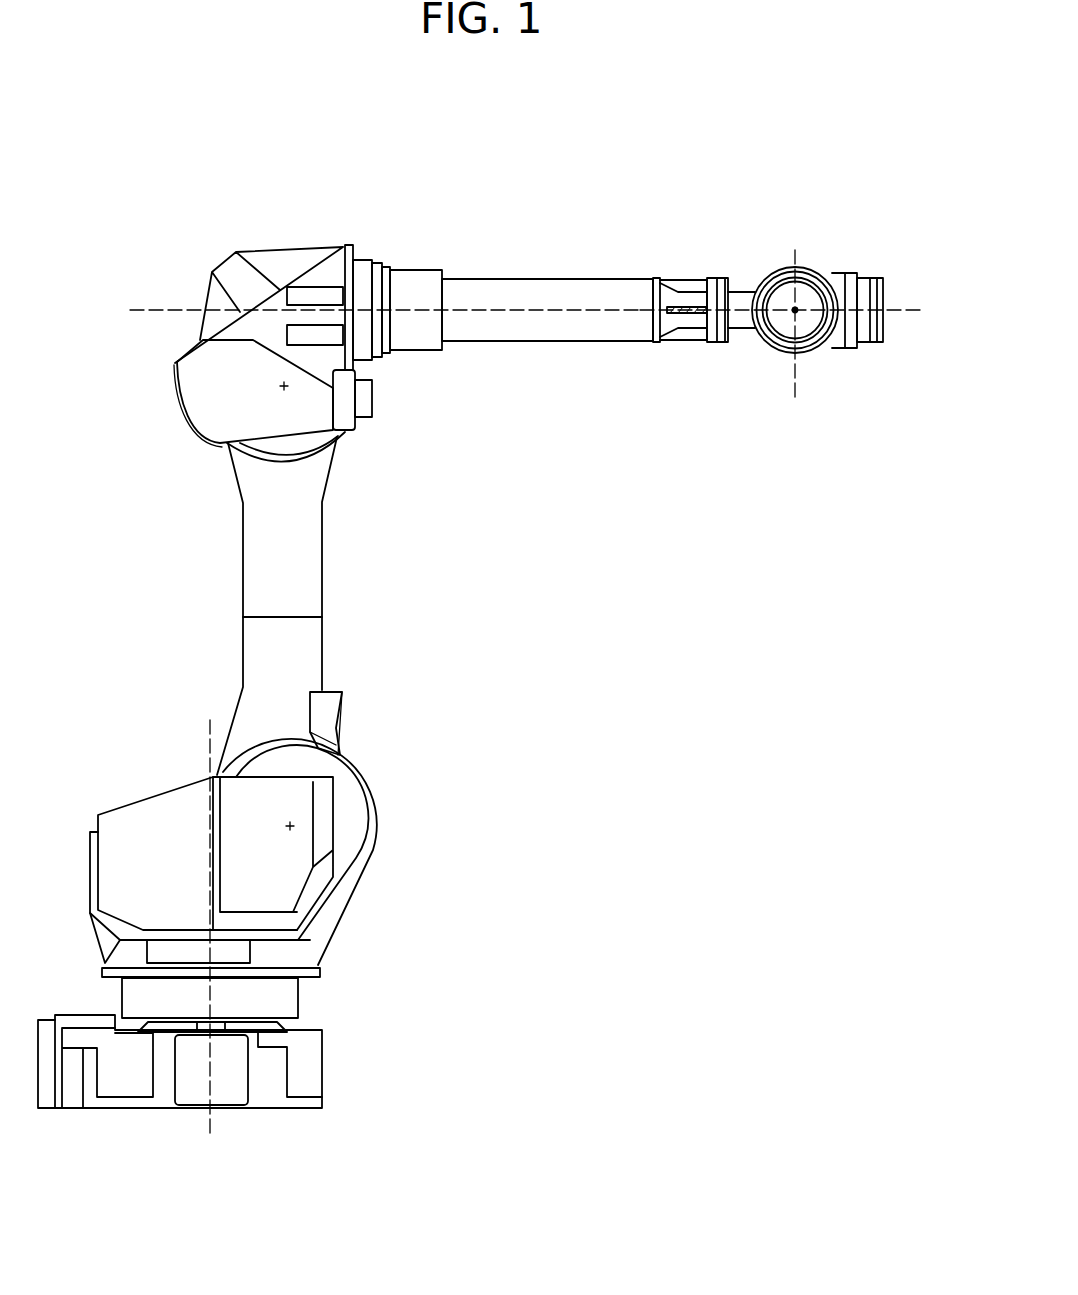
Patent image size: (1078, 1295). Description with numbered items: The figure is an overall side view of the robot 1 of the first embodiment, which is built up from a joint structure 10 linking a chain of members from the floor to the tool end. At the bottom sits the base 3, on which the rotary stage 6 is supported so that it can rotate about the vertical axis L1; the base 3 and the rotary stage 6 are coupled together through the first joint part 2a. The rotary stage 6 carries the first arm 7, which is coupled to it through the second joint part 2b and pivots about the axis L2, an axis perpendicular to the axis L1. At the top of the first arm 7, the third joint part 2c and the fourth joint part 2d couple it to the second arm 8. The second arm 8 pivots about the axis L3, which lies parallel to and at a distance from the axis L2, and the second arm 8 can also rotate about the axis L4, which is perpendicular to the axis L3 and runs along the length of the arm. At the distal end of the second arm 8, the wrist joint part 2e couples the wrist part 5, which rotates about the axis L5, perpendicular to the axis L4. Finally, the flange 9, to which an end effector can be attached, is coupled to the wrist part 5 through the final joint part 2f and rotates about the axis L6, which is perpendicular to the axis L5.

The robot 1 is at (335, 180).
The first joint part 2a is at (300, 992).
The second joint part 2b is at (365, 792).
The third joint part 2c is at (345, 433).
The fourth joint part 2d is at (385, 261).
The wrist joint part 2e is at (806, 266).
The final joint part 2f is at (870, 278).
The base 3 is at (323, 1063).
The wrist part 5 is at (830, 349).
The rotary stage 6 is at (117, 862).
The first arm 7 is at (307, 583).
The second arm 8 is at (550, 278).
The flange 9 is at (883, 326).
The joint structure 10 is at (372, 738).
The vertical axis L1 is at (212, 955).
The axis L2 is at (272, 829).
The axis L3 is at (265, 391).
The axis L4 is at (366, 315).
The axis L5 is at (797, 344).
The axis L6 is at (798, 314).